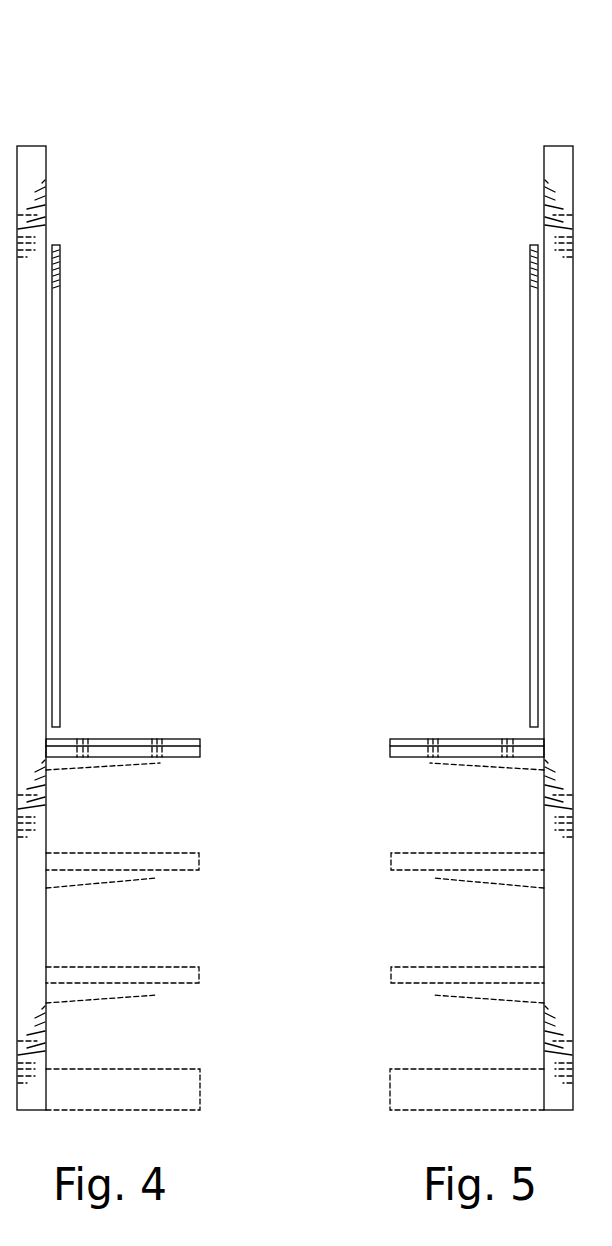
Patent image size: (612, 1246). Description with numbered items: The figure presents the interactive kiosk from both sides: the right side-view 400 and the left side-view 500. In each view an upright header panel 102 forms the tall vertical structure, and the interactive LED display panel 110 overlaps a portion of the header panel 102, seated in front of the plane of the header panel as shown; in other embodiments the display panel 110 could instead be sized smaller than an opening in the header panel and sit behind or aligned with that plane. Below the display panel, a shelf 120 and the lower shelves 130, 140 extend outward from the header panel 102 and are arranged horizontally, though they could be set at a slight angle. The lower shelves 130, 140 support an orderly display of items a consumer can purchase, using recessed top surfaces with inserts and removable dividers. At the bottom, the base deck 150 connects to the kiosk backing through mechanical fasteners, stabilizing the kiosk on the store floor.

In FIG. 4, the right side-view 400 is at (67, 92).
In FIG. 5, the left side-view 500 is at (496, 105).
In FIG. 4, the upright header panel 102 is at (46, 223).
In FIG. 5, the upright header panel 102 is at (544, 225).
In FIG. 4, the interactive LED display panel 110 is at (59, 391).
In FIG. 5, the interactive LED display panel 110 is at (531, 392).
In FIG. 4, the shelf 120 is at (136, 739).
In FIG. 5, the shelf 120 is at (448, 739).
In FIG. 4, the lower shelf 130 is at (136, 853).
In FIG. 5, the lower shelf 130 is at (448, 853).
In FIG. 4, the lower shelf 140 is at (136, 967).
In FIG. 5, the lower shelf 140 is at (448, 967).
In FIG. 4, the base deck 150 is at (136, 1069).
In FIG. 5, the base deck 150 is at (448, 1069).